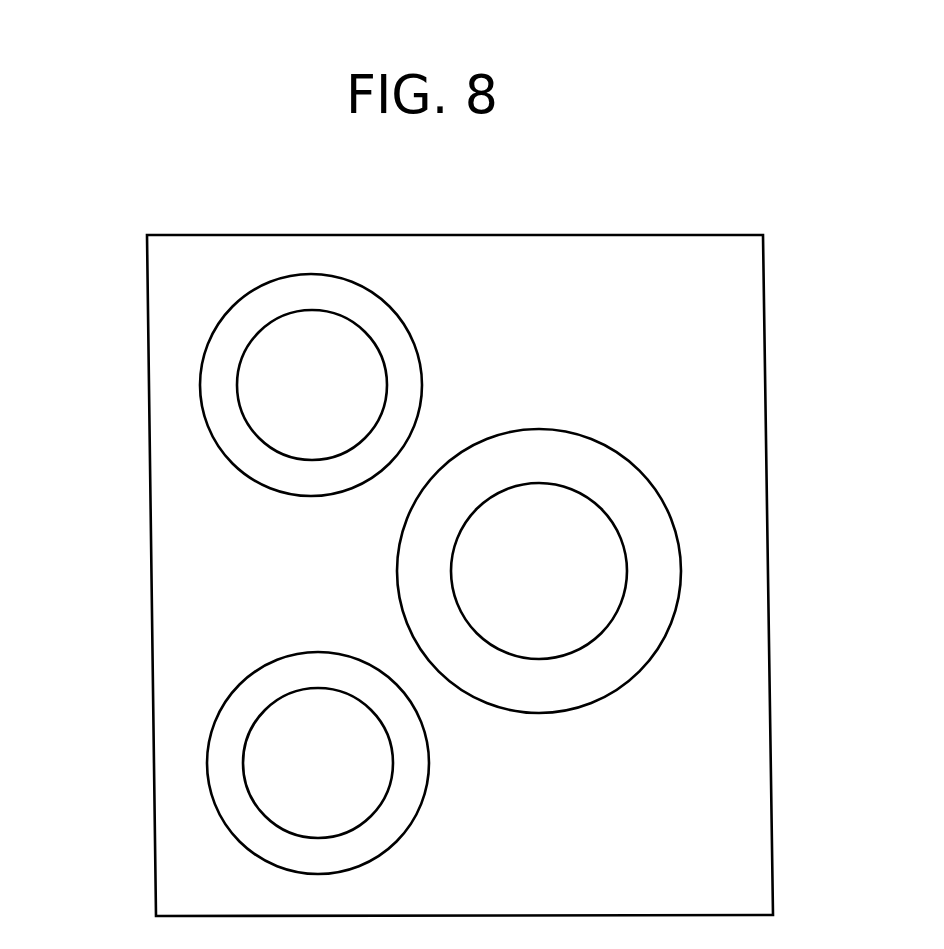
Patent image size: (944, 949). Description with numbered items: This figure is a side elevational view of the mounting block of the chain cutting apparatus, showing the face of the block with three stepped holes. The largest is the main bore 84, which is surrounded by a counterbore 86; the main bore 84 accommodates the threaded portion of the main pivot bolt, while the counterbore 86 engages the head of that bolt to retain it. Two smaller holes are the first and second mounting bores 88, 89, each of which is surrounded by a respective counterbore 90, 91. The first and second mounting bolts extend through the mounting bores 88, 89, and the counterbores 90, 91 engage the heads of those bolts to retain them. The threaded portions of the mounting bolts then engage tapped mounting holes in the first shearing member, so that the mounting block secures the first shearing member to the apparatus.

The main bore 84 is at (576, 540).
The counterbore 86 is at (632, 638).
The first mounting bore 88 is at (293, 348).
The second mounting bore 89 is at (292, 723).
The counterbore 90 is at (218, 380).
The counterbore 91 is at (235, 786).